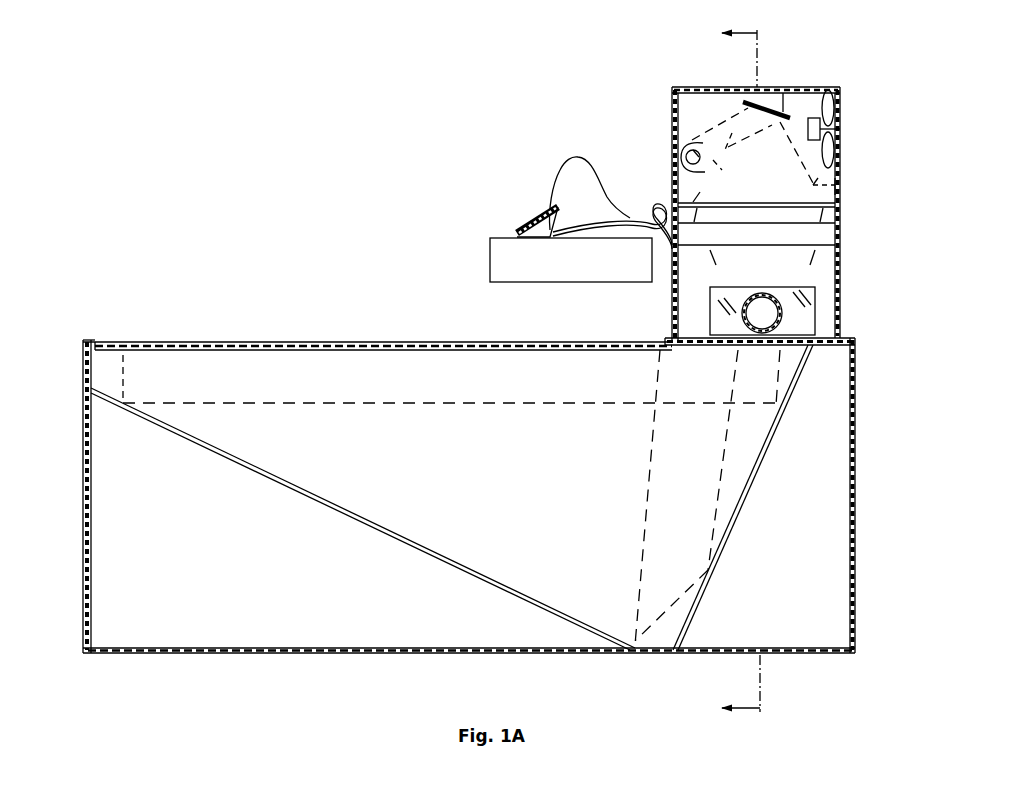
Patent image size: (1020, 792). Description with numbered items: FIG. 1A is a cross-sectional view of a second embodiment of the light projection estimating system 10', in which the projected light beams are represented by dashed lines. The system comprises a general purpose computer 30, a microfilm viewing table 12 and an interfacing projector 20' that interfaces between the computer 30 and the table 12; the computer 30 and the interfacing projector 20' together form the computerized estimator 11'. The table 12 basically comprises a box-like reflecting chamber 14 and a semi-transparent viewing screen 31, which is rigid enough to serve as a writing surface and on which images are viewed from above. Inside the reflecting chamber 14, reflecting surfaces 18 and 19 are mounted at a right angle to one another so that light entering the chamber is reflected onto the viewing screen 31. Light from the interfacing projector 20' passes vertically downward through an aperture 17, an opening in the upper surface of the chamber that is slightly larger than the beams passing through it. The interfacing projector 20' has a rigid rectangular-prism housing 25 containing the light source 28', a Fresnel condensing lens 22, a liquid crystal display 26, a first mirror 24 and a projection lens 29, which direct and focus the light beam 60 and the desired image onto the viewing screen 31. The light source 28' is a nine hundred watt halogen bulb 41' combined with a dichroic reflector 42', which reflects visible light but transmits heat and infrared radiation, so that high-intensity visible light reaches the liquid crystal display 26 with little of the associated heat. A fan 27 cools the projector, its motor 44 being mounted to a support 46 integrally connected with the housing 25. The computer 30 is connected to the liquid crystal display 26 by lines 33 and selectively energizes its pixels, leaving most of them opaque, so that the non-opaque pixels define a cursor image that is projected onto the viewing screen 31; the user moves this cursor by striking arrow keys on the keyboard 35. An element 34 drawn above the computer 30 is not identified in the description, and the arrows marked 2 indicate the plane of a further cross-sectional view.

The section line 2- 2 is at (751, 373).
The light projection estimating system 10' is at (539, 671).
The computerized estimator 11' is at (595, 306).
The microfilm viewing table 12 is at (487, 338).
The reflecting chamber 14 is at (854, 450).
The aperture 17 is at (728, 350).
The reflecting surface 18 is at (748, 478).
The reflecting surface 19 is at (283, 478).
The interfacing projector 20' is at (745, 194).
The Fresnel condensing lens 22 is at (770, 200).
The first mirror 24 is at (708, 252).
The housing 25 is at (672, 143).
The liquid crystal display 26 is at (837, 236).
The fan 27 is at (845, 145).
The light source 28' is at (752, 145).
The projection lens 29 is at (768, 296).
The general purpose computer 30 is at (489, 258).
The viewing screen 31 is at (305, 342).
The lines 33 is at (662, 218).
The cover 34 is at (568, 175).
The keyboard 35 is at (528, 218).
The halogen light bulb 41' is at (702, 111).
The dichroic reflector 42' is at (735, 81).
The motor 44 is at (786, 127).
The support 46 is at (838, 126).
The light beam 60 is at (843, 192).